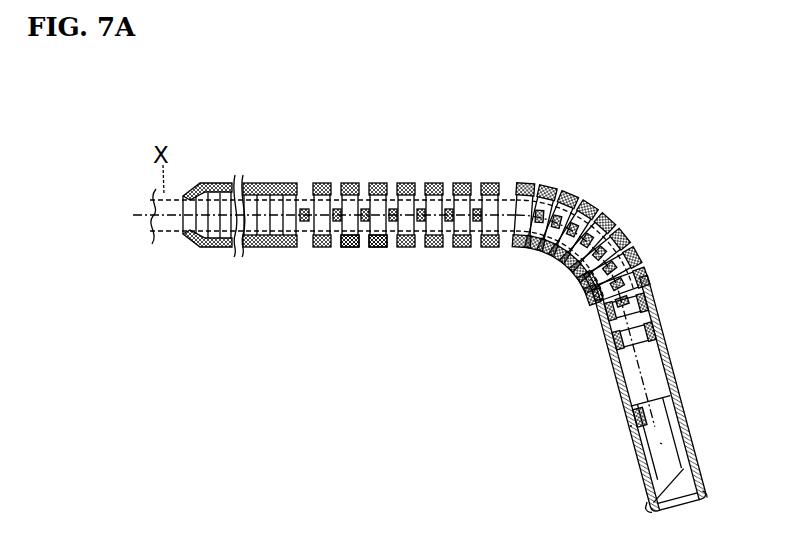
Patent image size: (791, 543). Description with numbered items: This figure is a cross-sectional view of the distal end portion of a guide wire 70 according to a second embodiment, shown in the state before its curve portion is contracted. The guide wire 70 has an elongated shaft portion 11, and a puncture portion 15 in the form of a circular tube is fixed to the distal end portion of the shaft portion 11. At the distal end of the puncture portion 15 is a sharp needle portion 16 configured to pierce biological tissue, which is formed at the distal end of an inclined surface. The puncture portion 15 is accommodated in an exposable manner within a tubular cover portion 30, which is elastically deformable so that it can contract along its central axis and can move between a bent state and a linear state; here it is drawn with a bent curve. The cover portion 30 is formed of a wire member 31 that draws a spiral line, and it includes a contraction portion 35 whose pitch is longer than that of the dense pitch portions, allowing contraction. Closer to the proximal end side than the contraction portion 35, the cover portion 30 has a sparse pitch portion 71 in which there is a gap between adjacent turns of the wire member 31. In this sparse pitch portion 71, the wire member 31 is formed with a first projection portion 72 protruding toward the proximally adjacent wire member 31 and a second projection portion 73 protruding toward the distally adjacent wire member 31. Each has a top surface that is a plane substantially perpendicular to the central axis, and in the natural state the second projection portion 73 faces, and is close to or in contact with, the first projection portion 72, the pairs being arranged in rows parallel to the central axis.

The guide wire 70 is at (234, 162).
The shaft portion 11 is at (182, 194).
The cover portion 30 is at (293, 180).
The wire member 31 is at (463, 184).
The first projection portion 72 is at (410, 208).
The second projection portion 73 is at (368, 245).
The sparse pitch portion 71 is at (482, 298).
The contraction portion 35 is at (597, 210).
The puncture portion 15 is at (630, 458).
The needle portion 16 is at (686, 508).